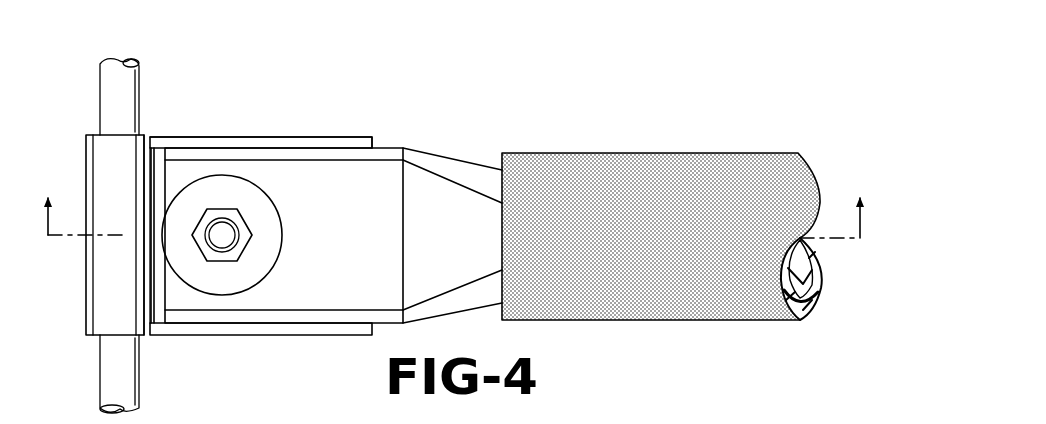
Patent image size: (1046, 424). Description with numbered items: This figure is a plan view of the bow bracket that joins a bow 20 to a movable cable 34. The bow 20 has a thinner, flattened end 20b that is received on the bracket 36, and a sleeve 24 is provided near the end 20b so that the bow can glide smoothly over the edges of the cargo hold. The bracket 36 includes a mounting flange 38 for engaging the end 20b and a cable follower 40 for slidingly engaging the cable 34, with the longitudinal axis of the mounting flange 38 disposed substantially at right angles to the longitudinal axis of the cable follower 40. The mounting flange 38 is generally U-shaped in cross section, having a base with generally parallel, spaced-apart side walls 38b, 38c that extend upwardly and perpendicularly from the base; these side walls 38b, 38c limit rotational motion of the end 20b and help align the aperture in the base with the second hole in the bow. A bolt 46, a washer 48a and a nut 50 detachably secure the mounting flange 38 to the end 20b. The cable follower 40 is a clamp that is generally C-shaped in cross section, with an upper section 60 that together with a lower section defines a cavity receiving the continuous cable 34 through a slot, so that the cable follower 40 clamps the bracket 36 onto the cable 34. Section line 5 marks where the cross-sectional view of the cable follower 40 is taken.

The cable 34 is at (108, 88).
The upper section 60 is at (105, 160).
The cable follower 40 is at (82, 284).
The section line 5- 5 is at (454, 199).
The side wall 38c is at (196, 137).
The side wall 38b is at (222, 340).
The mounting flange 38 is at (284, 134).
The bracket 36 is at (239, 134).
The end 20b is at (356, 184).
The bow 20 is at (456, 158).
The sleeve 24 is at (661, 178).
The washer 48a is at (258, 260).
The nut 50 is at (247, 231).
The bolt 46 is at (228, 228).